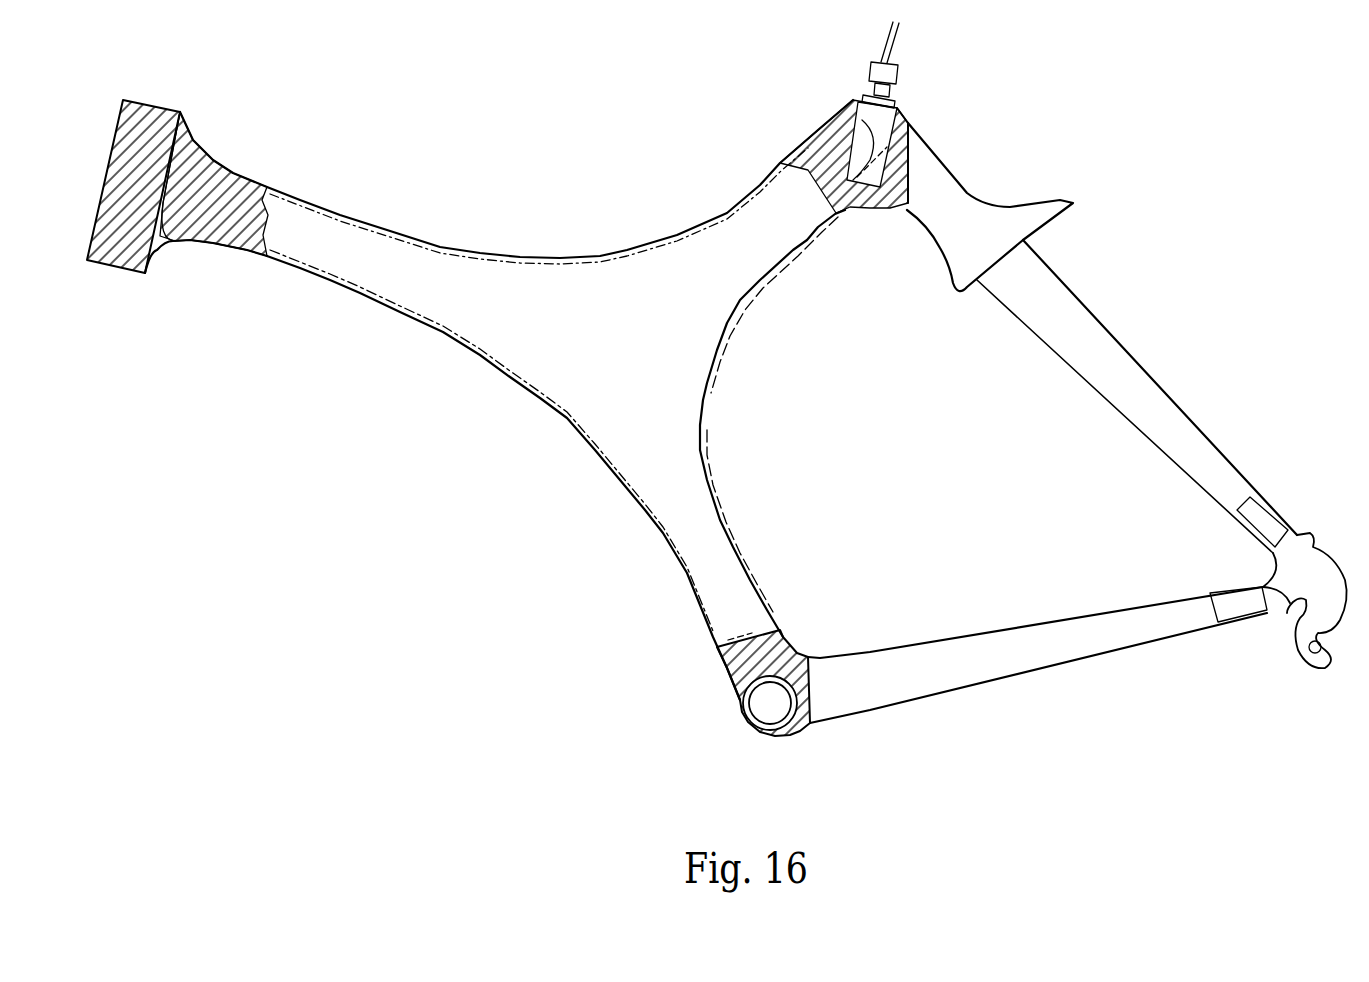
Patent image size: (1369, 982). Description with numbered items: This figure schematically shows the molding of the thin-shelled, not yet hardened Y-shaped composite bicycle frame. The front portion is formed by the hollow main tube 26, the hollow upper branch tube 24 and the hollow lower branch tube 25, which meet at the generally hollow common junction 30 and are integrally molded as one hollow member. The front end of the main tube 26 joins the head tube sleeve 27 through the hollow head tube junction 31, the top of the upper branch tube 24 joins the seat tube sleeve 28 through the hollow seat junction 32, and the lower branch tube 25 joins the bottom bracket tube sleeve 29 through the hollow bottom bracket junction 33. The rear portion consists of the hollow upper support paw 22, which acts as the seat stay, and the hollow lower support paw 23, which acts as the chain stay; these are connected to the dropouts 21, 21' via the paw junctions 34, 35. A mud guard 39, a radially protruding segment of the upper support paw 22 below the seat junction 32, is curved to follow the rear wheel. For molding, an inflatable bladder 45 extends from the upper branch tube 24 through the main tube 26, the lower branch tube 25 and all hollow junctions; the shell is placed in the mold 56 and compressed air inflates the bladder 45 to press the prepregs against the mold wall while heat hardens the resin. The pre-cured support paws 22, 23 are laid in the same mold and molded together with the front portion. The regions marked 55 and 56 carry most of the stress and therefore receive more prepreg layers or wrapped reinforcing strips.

The dropout 21 is at (1291, 667).
The dropout 21' is at (1309, 600).
The upper support paw 22 is at (1147, 378).
The lower support paw 23 is at (1070, 662).
The upper branch tube 24 is at (795, 257).
The lower branch tube 25 is at (742, 537).
The main tube 26 is at (387, 230).
The head tube sleeve 27 is at (180, 102).
The seat tube sleeve 28 is at (908, 120).
The bottom bracket tube sleeve 29 is at (777, 737).
The common junction 30 is at (573, 410).
The head tube junction 31 is at (208, 162).
The seat junction 32 is at (823, 132).
The bottom bracket junction 33 is at (723, 668).
The upper paw junction 34 is at (1187, 625).
The lower paw junction 35 is at (1233, 482).
The mud guard 39 is at (1073, 203).
The inflatable bladder 45 is at (450, 247).
The emphasized portion 55 is at (183, 245).
The mold 56 is at (612, 468).